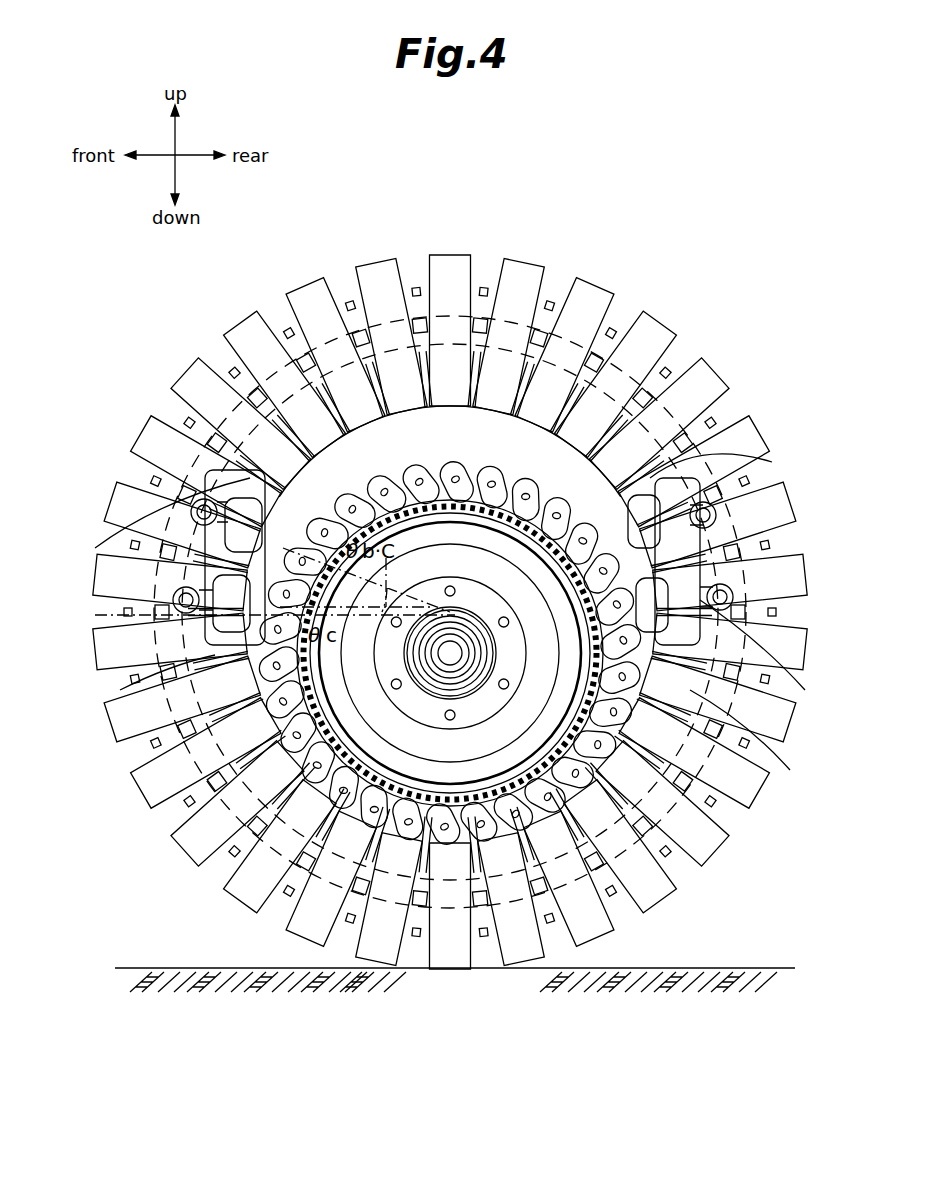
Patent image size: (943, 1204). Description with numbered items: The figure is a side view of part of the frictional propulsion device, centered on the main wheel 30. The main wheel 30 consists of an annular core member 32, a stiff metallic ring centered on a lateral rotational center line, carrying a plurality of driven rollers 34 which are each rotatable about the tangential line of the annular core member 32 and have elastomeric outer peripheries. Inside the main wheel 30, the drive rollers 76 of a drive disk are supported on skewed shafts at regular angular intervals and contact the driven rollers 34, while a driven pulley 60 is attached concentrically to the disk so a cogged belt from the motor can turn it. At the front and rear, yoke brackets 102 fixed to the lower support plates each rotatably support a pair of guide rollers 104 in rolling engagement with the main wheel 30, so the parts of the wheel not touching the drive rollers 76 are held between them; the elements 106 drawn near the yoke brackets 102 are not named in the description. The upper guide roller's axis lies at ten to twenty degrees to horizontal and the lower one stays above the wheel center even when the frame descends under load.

The main wheel 30 is at (714, 375).
The annular core member 32 is at (745, 752).
The driven roller 34 is at (600, 300).
The driven pulley 60 is at (432, 503).
The drive roller 76 is at (508, 492).
The yoke bracket 102 is at (722, 462).
The guide roller 104 is at (705, 700).
The bolt 106 is at (755, 665).